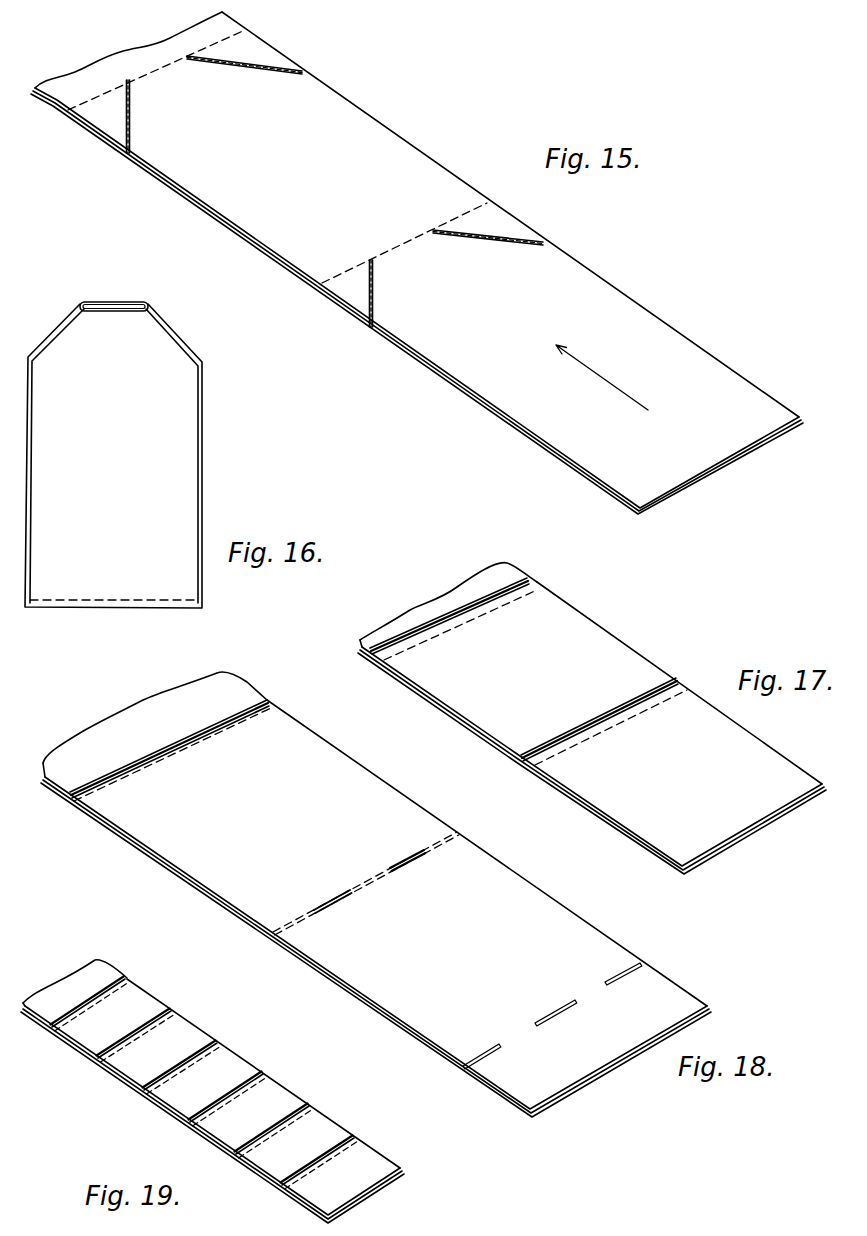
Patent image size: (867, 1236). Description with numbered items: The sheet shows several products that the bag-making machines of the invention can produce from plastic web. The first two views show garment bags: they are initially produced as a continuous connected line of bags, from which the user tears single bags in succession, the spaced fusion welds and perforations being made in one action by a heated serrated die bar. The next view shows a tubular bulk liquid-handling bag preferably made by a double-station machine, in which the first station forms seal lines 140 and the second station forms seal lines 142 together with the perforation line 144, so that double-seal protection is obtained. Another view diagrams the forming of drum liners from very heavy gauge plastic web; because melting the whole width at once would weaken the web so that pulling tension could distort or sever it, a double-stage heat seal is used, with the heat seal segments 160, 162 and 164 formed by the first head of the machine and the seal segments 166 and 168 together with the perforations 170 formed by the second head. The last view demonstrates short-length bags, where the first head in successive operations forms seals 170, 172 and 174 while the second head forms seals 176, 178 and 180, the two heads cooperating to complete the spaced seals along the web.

In FIG. 17, the seal lines 140 is at (510, 580).
In FIG. 17, the seal lines 142 is at (519, 588).
In FIG. 17, the perforation line 144 is at (477, 618).
In FIG. 18, the heat seal segment 160 is at (490, 1056).
In FIG. 18, the heat seal segment 162 is at (560, 1013).
In FIG. 18, the heat seal segment 164 is at (628, 976).
In FIG. 18, the seal segment 166 is at (333, 904).
In FIG. 18, the seal segment 168 is at (405, 862).
In FIG. 18, the perforations / seal 170 is at (378, 880).
In FIG. 19, the perforations / seal 170 is at (348, 1143).
In FIG. 19, the seal 172 is at (258, 1078).
In FIG. 19, the seal 174 is at (165, 1014).
In FIG. 19, the seal 176 is at (248, 1147).
In FIG. 19, the seal 178 is at (152, 1085).
In FIG. 19, the seal 180 is at (70, 1015).